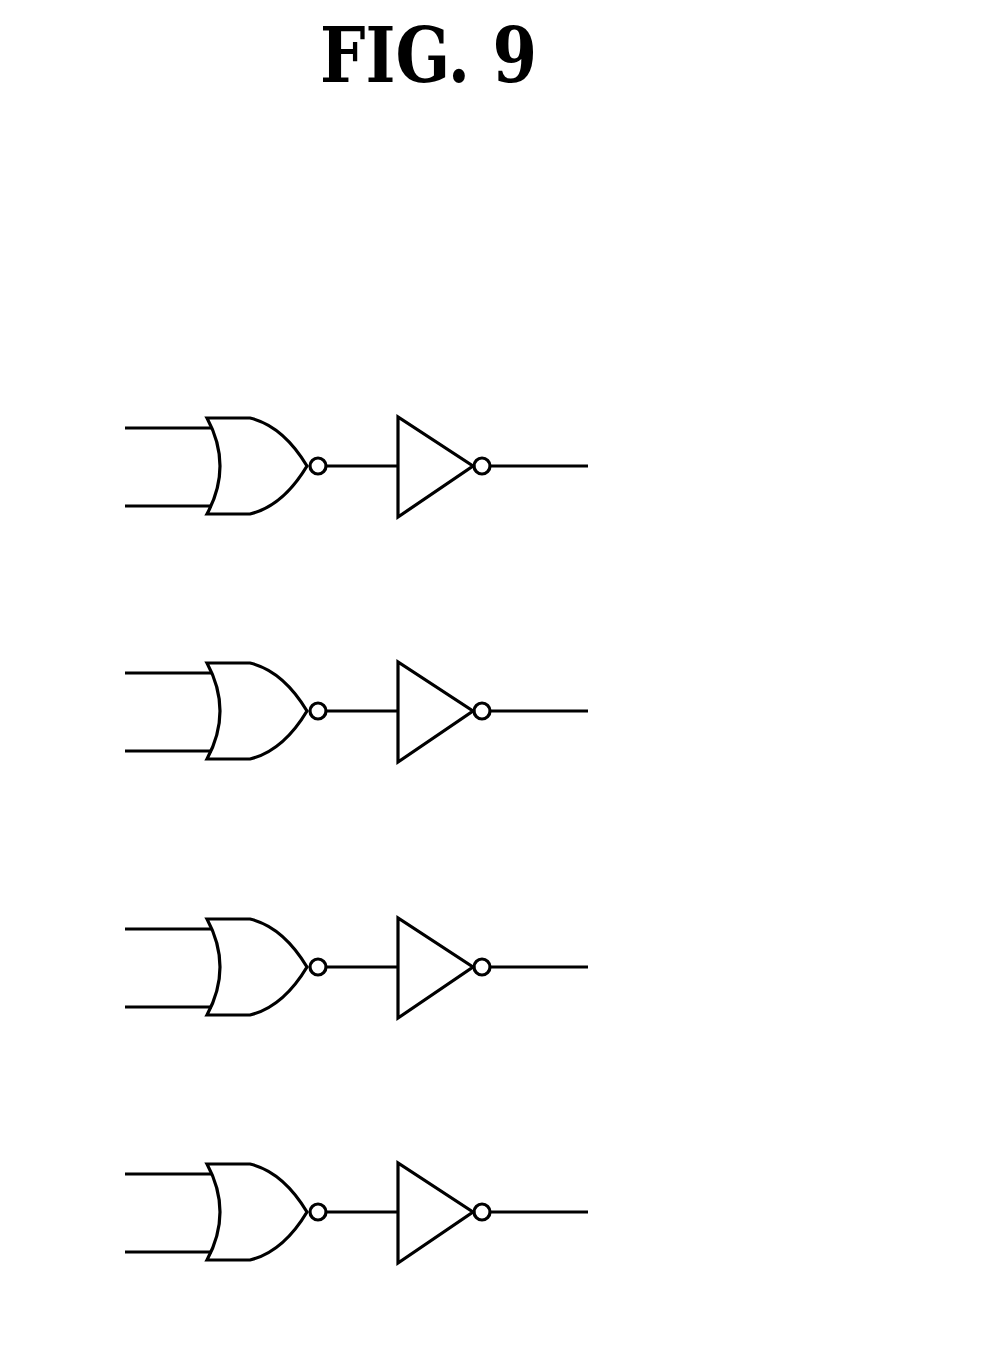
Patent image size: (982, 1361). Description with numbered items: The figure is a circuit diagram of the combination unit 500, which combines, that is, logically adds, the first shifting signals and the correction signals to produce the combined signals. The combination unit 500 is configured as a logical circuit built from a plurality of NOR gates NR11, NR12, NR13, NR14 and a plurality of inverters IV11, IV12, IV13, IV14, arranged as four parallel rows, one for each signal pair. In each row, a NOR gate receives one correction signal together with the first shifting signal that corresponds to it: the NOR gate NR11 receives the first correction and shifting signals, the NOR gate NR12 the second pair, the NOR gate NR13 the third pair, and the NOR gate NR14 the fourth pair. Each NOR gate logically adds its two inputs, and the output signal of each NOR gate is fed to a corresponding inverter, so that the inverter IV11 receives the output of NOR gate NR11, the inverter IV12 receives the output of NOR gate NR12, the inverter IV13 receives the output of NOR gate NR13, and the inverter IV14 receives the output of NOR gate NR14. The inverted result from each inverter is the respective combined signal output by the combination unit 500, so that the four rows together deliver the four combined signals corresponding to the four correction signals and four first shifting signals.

The combination unit 500 is at (845, 211).
The NOR gate NR11 is at (247, 417).
The NOR gate NR12 is at (247, 662).
The NOR gate NR13 is at (247, 918).
The NOR gate NR14 is at (247, 1163).
The inverter IV11 is at (428, 435).
The inverter IV12 is at (428, 680).
The inverter IV13 is at (428, 936).
The inverter IV14 is at (428, 1181).